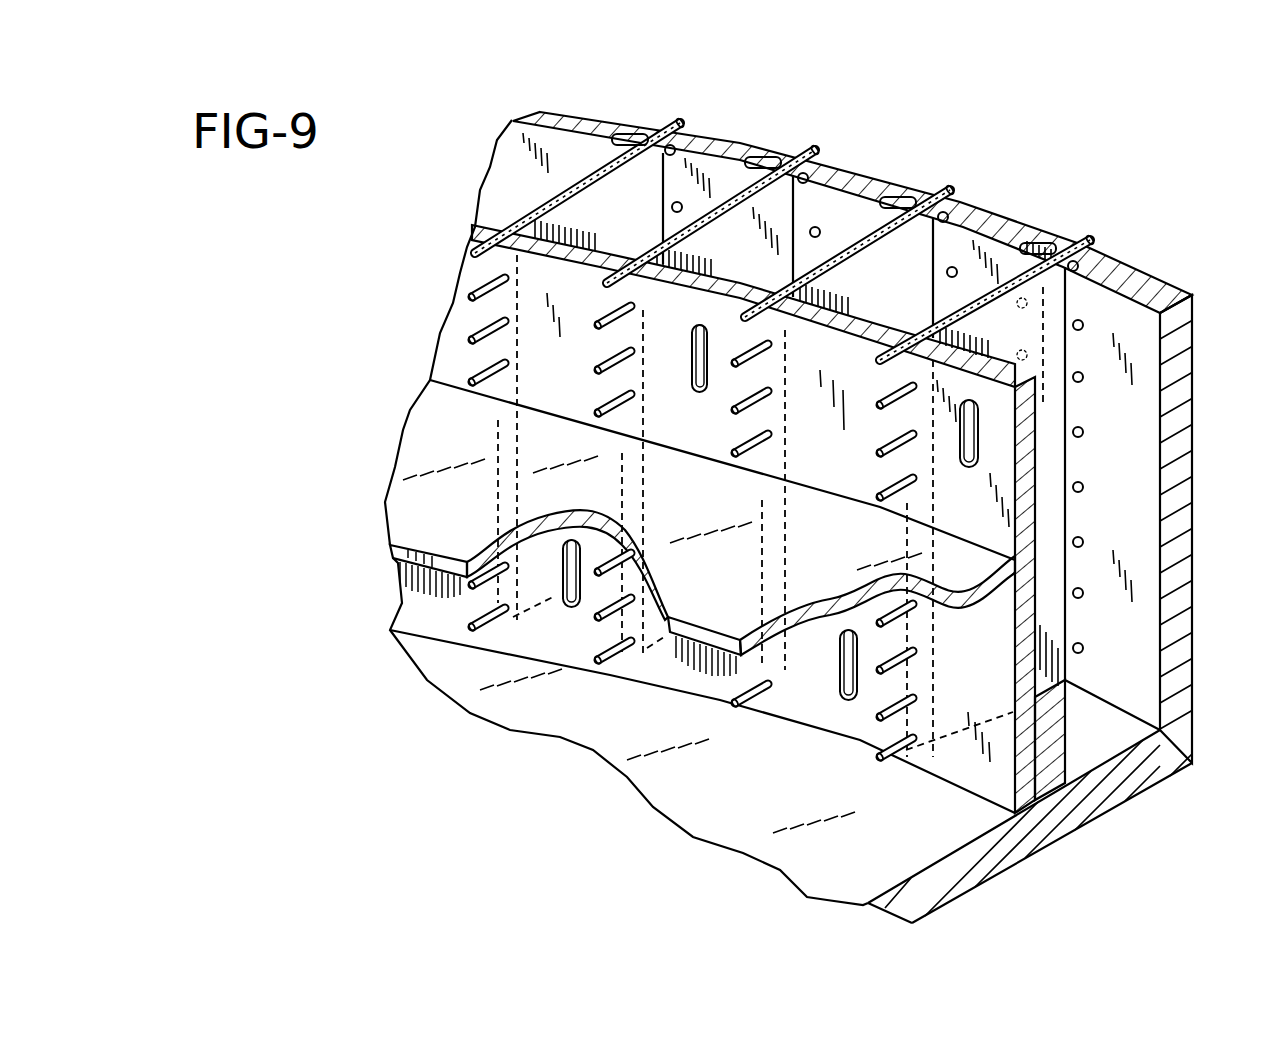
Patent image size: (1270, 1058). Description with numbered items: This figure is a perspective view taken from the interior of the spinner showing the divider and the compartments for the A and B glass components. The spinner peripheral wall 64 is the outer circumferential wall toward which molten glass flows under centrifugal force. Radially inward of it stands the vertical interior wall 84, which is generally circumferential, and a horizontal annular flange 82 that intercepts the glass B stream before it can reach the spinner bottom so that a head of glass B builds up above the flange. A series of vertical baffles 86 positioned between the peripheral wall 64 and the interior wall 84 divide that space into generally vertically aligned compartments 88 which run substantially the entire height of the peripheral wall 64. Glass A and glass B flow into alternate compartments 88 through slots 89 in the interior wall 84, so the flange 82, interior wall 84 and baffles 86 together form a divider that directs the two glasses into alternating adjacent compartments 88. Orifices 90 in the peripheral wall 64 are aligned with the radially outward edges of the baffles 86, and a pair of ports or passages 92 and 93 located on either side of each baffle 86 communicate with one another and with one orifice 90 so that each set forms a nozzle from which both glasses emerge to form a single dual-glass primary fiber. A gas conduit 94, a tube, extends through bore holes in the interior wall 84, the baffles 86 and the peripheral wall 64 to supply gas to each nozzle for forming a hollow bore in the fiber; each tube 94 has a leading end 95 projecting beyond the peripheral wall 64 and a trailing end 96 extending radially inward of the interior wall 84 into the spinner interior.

The spinner peripheral wall 64 is at (1186, 395).
The horizontal annular flange 82 is at (438, 435).
The vertical interior wall 84 is at (477, 228).
The vertical baffles 86 is at (540, 194).
The compartments 88 is at (761, 289).
The slots 89 is at (700, 388).
The orifices 90 is at (655, 128).
The passage 92 is at (674, 150).
The passage 93 is at (625, 138).
The gas conduit 94 is at (478, 299).
The leading end 95 is at (684, 126).
The trailing end 96 is at (887, 362).